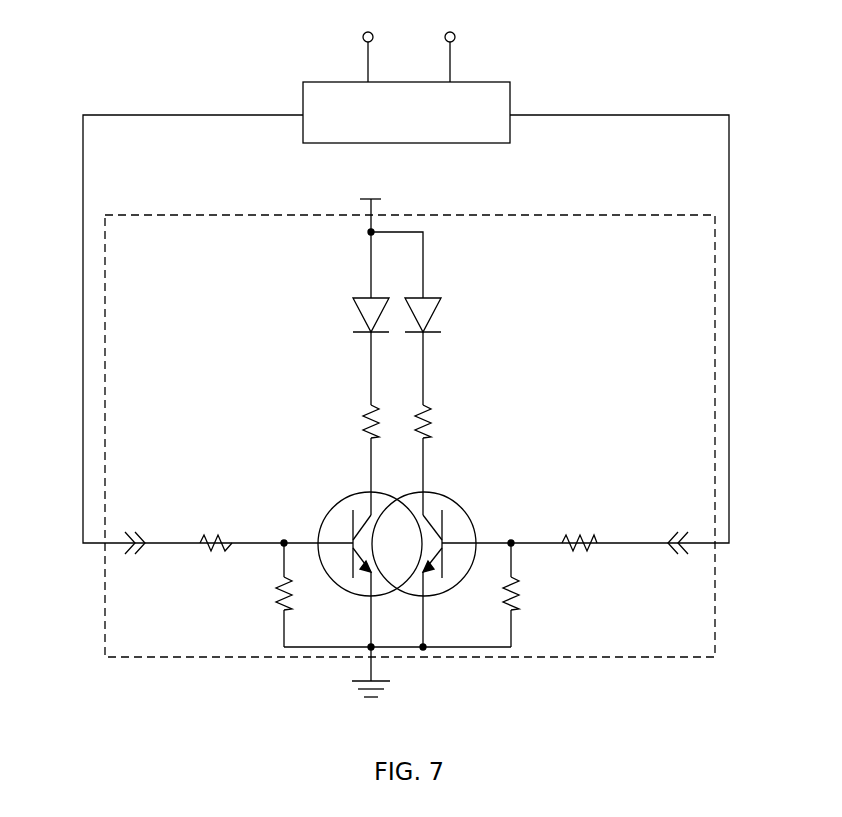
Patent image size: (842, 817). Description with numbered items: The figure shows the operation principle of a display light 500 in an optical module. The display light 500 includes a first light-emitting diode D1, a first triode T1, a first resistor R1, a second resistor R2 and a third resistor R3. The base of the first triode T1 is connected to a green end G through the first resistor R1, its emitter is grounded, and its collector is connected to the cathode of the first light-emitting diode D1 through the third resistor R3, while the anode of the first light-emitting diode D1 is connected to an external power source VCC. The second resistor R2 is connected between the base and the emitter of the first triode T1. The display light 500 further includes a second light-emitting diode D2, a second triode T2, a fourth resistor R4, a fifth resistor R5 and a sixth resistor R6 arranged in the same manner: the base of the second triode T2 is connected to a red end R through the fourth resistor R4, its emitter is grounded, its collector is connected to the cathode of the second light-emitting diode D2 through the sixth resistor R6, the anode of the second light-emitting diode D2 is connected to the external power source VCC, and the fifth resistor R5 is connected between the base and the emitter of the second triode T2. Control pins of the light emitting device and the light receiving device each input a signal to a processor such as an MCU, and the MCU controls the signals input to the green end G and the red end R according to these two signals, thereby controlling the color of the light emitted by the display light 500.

The display light 500 is at (552, 214).
The element MCU is at (406, 112).
The external power source VCC is at (369, 204).
The first light-emitting diode D1 is at (448, 315).
The second light-emitting diode D2 is at (347, 315).
The first resistor R1 is at (579, 526).
The second resistor R2 is at (530, 593).
The third resistor R3 is at (444, 421).
The fourth resistor R4 is at (216, 527).
The fifth resistor R5 is at (262, 593).
The sixth resistor R6 is at (351, 421).
The first triode T1 is at (444, 544).
The second triode T2 is at (351, 544).
The red end R is at (133, 557).
The green end G is at (678, 555).